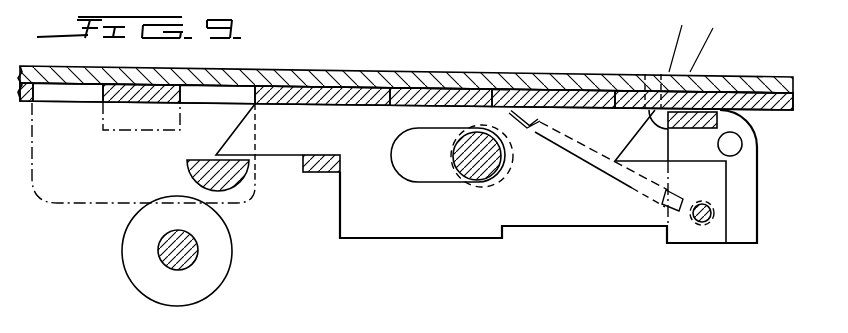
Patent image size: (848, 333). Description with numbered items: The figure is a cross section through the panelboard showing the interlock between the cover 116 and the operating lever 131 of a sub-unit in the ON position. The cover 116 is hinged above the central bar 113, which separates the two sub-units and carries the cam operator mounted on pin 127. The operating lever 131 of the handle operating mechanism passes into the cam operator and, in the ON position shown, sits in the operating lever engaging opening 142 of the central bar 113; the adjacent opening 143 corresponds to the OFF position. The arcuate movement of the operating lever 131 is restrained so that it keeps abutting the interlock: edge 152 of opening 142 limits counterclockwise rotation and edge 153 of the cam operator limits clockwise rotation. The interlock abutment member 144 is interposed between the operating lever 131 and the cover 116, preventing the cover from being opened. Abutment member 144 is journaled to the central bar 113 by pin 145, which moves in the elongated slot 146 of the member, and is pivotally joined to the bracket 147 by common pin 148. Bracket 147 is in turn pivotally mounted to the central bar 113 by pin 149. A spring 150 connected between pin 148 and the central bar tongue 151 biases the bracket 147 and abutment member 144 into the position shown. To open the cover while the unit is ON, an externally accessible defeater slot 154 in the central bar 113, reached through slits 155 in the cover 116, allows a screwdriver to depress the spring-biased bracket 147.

The central bar 113 is at (375, 95).
The cover 116 is at (344, 72).
The operating lever engaging opening 142 is at (233, 95).
The operating lever engaging opening 143 is at (57, 90).
The edge of cam operator 153 is at (34, 176).
The edge of opening 152 is at (255, 172).
The operating lever 131 is at (234, 173).
The pin 127 is at (160, 250).
The interlock abutment member 144 is at (400, 227).
The elongated slot 146 is at (416, 154).
The pin 145 is at (500, 160).
The central bar tongue 151 is at (506, 150).
The spring 150 is at (651, 191).
The common pin 148 is at (708, 224).
The bracket 147 is at (747, 203).
The pin 149 is at (737, 144).
The defeater slot 154 is at (622, 92).
The slits 155 is at (640, 80).